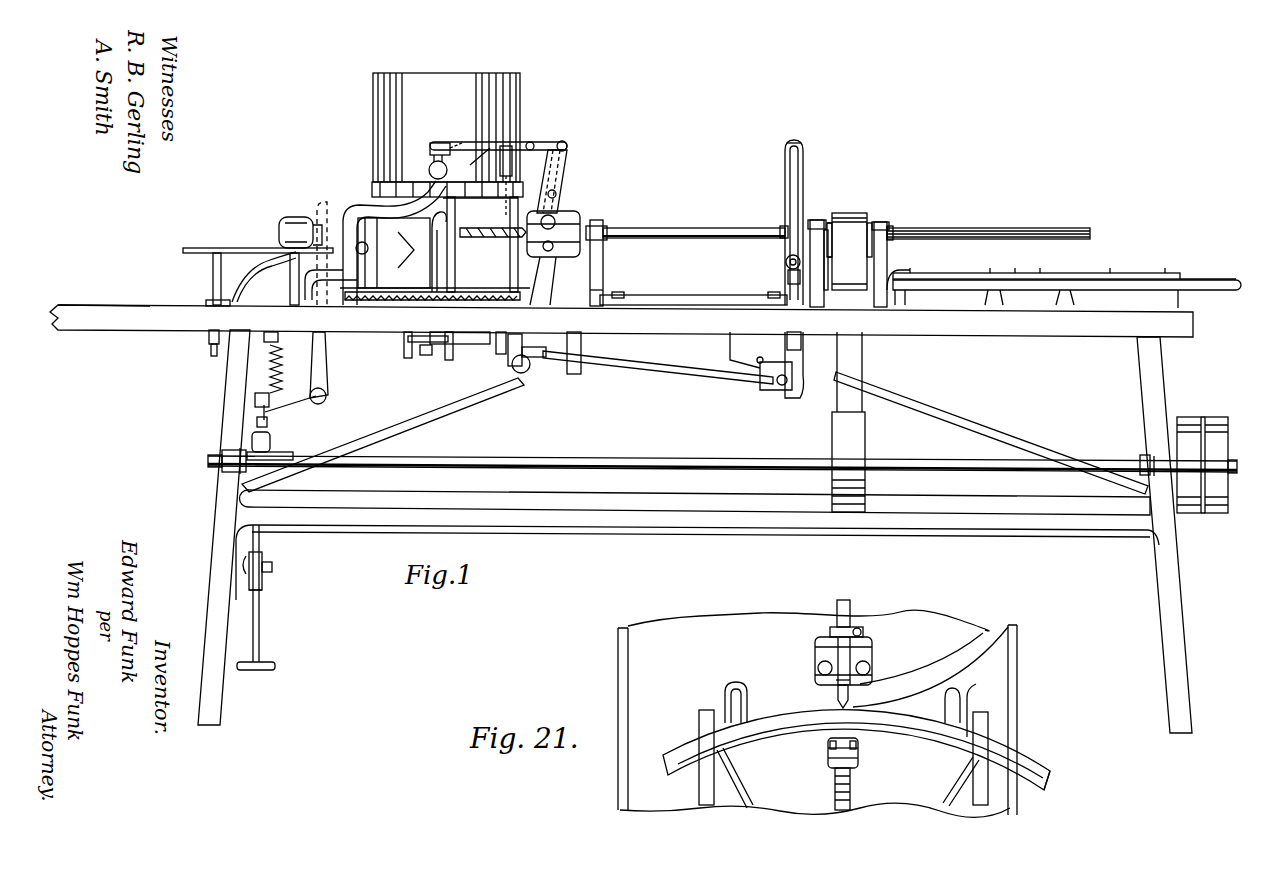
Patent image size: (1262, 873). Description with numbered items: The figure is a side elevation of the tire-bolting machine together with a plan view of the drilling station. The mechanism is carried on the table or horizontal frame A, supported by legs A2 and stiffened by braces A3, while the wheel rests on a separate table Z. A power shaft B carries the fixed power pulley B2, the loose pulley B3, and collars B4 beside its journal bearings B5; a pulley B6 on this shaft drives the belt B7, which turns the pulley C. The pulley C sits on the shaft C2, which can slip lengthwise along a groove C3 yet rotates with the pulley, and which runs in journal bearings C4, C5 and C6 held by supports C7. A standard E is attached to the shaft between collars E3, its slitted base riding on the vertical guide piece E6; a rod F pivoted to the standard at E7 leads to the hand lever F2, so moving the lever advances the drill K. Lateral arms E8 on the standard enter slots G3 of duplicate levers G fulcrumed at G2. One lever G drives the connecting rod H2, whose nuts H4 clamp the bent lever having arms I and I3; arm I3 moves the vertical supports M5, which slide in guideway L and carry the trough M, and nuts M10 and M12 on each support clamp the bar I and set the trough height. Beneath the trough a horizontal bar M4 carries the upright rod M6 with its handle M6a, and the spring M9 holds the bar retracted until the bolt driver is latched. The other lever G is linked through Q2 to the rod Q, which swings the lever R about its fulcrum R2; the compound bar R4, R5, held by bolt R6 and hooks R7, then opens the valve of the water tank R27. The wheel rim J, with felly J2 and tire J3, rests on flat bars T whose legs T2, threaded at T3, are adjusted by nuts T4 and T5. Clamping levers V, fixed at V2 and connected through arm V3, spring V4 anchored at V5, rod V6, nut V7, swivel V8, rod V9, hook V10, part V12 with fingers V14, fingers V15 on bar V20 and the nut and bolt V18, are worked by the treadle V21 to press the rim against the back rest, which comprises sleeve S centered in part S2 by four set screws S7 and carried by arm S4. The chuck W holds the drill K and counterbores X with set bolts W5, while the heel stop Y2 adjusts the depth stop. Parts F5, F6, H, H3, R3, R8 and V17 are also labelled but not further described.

In FIG. 1, the table or horizontal frame A is at (942, 330).
In FIG. 1, the legs A2 is at (228, 420).
In FIG. 1, the braces A3 is at (445, 408).
In FIG. 1, the table Z is at (105, 318).
In FIG. 1, the power shaft B is at (640, 460).
In FIG. 1, the power pulley B2 is at (1196, 418).
In FIG. 1, the loose pulley B3 is at (1210, 513).
In FIG. 1, the collars B4 is at (228, 470).
In FIG. 1, the journal bearings B5 is at (236, 474).
In FIG. 1, the pulley B6 is at (832, 435).
In FIG. 1, the belt B7 is at (850, 212).
In FIG. 1, the pulley C is at (874, 214).
In FIG. 1, the shaft C2 is at (682, 230).
In FIG. 21, the shaft C2 is at (848, 604).
In FIG. 1, the groove C3 is at (990, 230).
In FIG. 1, the journal bearing C4 is at (604, 228).
In FIG. 1, the journal bearing C5 is at (820, 228).
In FIG. 1, the journal bearing C6 is at (893, 228).
In FIG. 1, the supports C7 is at (604, 276).
In FIG. 1, the standard E is at (786, 250).
In FIG. 1, the collars E3 is at (782, 230).
In FIG. 1, the vertical guide piece E6 is at (668, 305).
In FIG. 1, the pivot connection E7 is at (800, 282).
In FIG. 1, the arms E8 is at (758, 256).
In FIG. 1, the rod F is at (1066, 285).
In FIG. 1, the lever F2 is at (1205, 285).
In FIG. 1, the bar F5 is at (1088, 275).
In FIG. 1, the supports F6 is at (1032, 291).
In FIG. 1, the levers G is at (785, 162).
In FIG. 1, the fulcrum G2 is at (800, 340).
In FIG. 1, the slot G3 is at (801, 155).
In FIG. 1, the link H is at (784, 386).
In FIG. 1, the connecting rod H2 is at (703, 375).
In FIG. 1, the block H3 is at (548, 355).
In FIG. 1, the nuts H4 is at (512, 360).
In FIG. 1, the arm I is at (526, 370).
In FIG. 1, the arm I3 is at (440, 346).
In FIG. 1, the drill K is at (490, 237).
In FIG. 21, the drill K is at (846, 706).
In FIG. 21, the guideway L is at (988, 640).
In FIG. 1, the trough M is at (393, 253).
In FIG. 1, the horizontal bar M4 is at (488, 292).
In FIG. 1, the vertical arms or supports M5 is at (400, 395).
In FIG. 1, the rod M6 is at (412, 268).
In FIG. 1, the handle M6a is at (398, 258).
In FIG. 1, the spring M9 is at (435, 309).
In FIG. 1, the nut M10 is at (408, 350).
In FIG. 1, the nut M12 is at (450, 362).
In FIG. 1, the rod Q is at (610, 368).
In FIG. 1, the link Q2 is at (750, 362).
In FIG. 1, the lever R is at (560, 172).
In FIG. 1, the fulcrum R2 is at (557, 196).
In FIG. 1, the pivot R3 is at (568, 146).
In FIG. 1, the bar R4 is at (550, 143).
In FIG. 1, the bar R5 is at (522, 146).
In FIG. 1, the bolt R6 is at (521, 180).
In FIG. 1, the hooks R7 is at (505, 138).
In FIG. 1, the bracket R8 is at (450, 150).
In FIG. 1, the tank R27 is at (447, 135).
In FIG. 1, the sleeve S is at (310, 222).
In FIG. 21, the sleeve S is at (860, 746).
In FIG. 1, the cylindrical part S2 is at (279, 228).
In FIG. 21, the cylindrical part S2 is at (860, 763).
In FIG. 1, the arm S4 is at (266, 280).
In FIG. 21, the arm S4 is at (852, 792).
In FIG. 21, the set screws S7 is at (832, 752).
In FIG. 1, the flat bars T is at (226, 251).
In FIG. 21, the flat bars T is at (700, 726).
In FIG. 1, the leg T2 is at (213, 272).
In FIG. 1, the screw thread T3 is at (214, 352).
In FIG. 1, the nut T4 is at (206, 302).
In FIG. 1, the nut T5 is at (212, 338).
In FIG. 1, the lever V is at (340, 212).
In FIG. 21, the lever V is at (735, 710).
In FIG. 1, the fixing point V2 is at (318, 398).
In FIG. 1, the arm V3 is at (255, 398).
In FIG. 1, the spring V4 is at (283, 367).
In FIG. 1, the connection point V5 is at (271, 327).
In FIG. 1, the rod V6 is at (268, 424).
In FIG. 1, the nut V7 is at (270, 436).
In FIG. 1, the swivel V8 is at (274, 450).
In FIG. 1, the rod V9 is at (262, 498).
In FIG. 1, the hook V10 is at (266, 533).
In FIG. 1, the rod or arm V12 is at (263, 548).
In FIG. 1, the hooks or fingers V14 is at (262, 590).
In FIG. 1, the hooks or fingers V15 is at (256, 551).
In FIG. 1, the spring V17 is at (248, 564).
In FIG. 1, the nut and bolt V18 is at (272, 567).
In FIG. 1, the rod or bar V20 is at (260, 620).
In FIG. 1, the treadle V21 is at (262, 670).
In FIG. 1, the chuck W is at (578, 220).
In FIG. 21, the chuck W is at (837, 648).
In FIG. 21, the set screw W5 is at (820, 672).
In FIG. 21, the counterbore X is at (838, 692).
In FIG. 21, the heel stop Y2 is at (860, 630).
In FIG. 21, the rim J is at (860, 754).
In FIG. 21, the felly J2 is at (1042, 762).
In FIG. 21, the tire J3 is at (1052, 772).